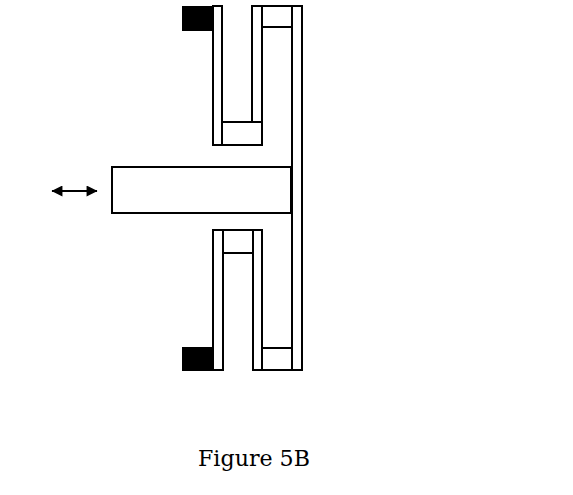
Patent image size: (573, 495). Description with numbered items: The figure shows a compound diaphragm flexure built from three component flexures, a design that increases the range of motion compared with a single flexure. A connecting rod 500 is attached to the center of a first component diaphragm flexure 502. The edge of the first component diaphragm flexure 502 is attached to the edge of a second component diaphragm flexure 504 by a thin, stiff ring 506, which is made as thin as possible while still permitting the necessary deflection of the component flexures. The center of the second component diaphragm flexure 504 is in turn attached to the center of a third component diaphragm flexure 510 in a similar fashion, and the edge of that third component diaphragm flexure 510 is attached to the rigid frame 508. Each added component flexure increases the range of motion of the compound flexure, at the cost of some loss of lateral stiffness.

The connecting rod 500 is at (146, 216).
The first component diaphragm flexure 502 is at (304, 209).
The second component diaphragm flexure 504 is at (259, 289).
The thin stiff ring 506 is at (236, 131).
The rigid frame 508 is at (181, 18).
The third component diaphragm flexure 510 is at (219, 292).